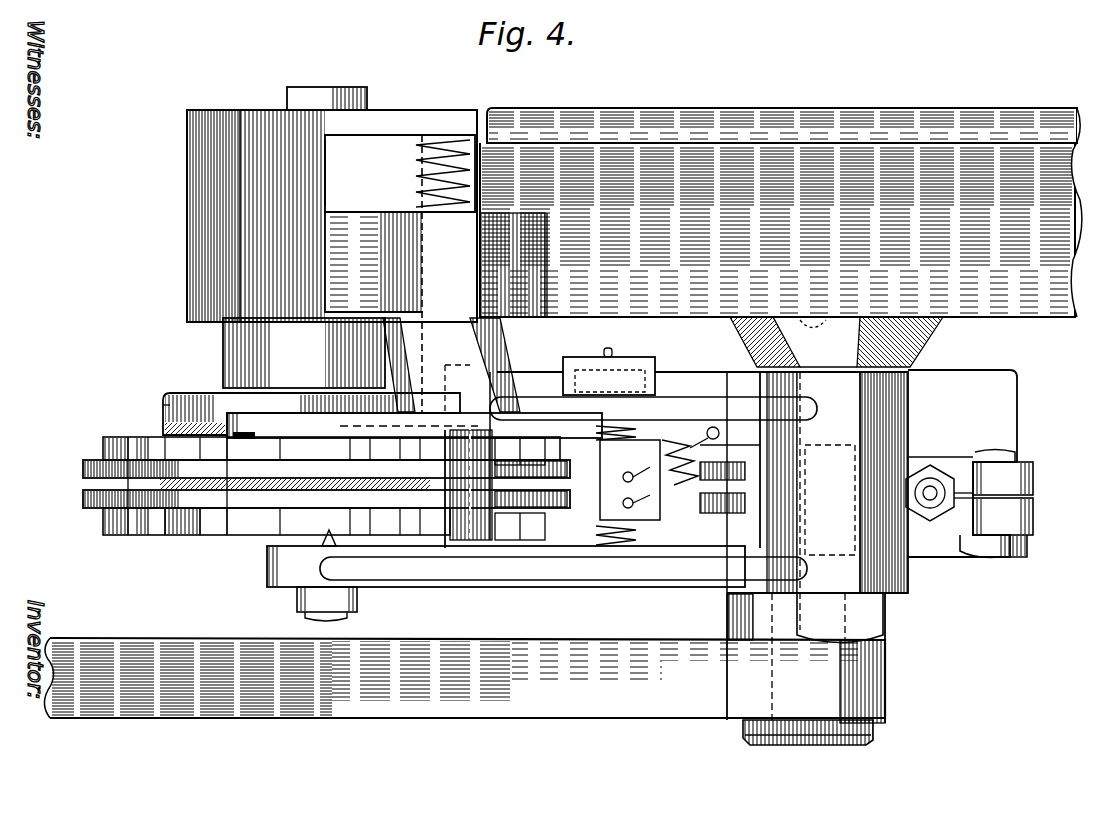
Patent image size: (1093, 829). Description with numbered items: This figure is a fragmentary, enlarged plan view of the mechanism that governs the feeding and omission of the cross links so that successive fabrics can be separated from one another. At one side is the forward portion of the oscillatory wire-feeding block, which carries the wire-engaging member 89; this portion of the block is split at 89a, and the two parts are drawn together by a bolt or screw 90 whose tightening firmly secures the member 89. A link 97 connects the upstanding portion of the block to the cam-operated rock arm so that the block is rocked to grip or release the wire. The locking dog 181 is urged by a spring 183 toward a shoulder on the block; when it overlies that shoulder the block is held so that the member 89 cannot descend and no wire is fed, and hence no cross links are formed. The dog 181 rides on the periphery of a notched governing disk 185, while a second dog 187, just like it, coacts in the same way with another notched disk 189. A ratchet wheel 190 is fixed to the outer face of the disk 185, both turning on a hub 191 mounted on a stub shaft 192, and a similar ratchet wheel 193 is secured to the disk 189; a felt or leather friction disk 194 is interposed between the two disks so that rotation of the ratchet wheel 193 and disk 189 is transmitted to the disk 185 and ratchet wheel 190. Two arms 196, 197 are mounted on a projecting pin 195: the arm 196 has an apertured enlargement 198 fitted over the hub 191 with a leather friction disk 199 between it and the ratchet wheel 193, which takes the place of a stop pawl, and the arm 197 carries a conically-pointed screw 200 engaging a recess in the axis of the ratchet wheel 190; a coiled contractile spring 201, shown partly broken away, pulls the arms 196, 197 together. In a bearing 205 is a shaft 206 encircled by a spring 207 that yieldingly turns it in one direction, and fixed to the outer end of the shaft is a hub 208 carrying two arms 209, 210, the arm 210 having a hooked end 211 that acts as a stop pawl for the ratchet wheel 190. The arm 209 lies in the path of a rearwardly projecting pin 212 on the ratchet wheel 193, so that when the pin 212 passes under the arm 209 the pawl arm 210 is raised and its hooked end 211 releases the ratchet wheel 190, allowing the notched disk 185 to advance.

The wire-engaging member 89 is at (932, 490).
The split portion of block 89a is at (1017, 493).
The bolt or screw 90 is at (978, 548).
The link 97 is at (464, 678).
The locking dog 181 is at (698, 513).
The spring 183 is at (690, 450).
The governing or controlling disk 185 is at (575, 604).
The dog 187 is at (735, 478).
The notched disk 189 is at (326, 471).
The ratchet wheel 190 is at (135, 535).
The hub 191 is at (224, 362).
The stub shaft 192 is at (316, 95).
The ratchet wheel 193 is at (160, 436).
The friction disk or washer 194 is at (225, 490).
The projecting pin 195 is at (806, 669).
The arm 196 is at (591, 382).
The arm 197 is at (537, 566).
The apertured enlargement 198 is at (180, 393).
The friction disk 199 is at (164, 405).
The conically-pointed screw 200 is at (330, 536).
The coiled contractile spring 201 is at (580, 432).
The bearing 205 is at (418, 270).
The shaft 206 is at (444, 273).
The spring 207 is at (413, 158).
The hub 208 is at (522, 500).
The arm 209 is at (414, 425).
The arm 210 is at (200, 535).
The hooked end 211 is at (168, 535).
The pin 212 is at (248, 432).